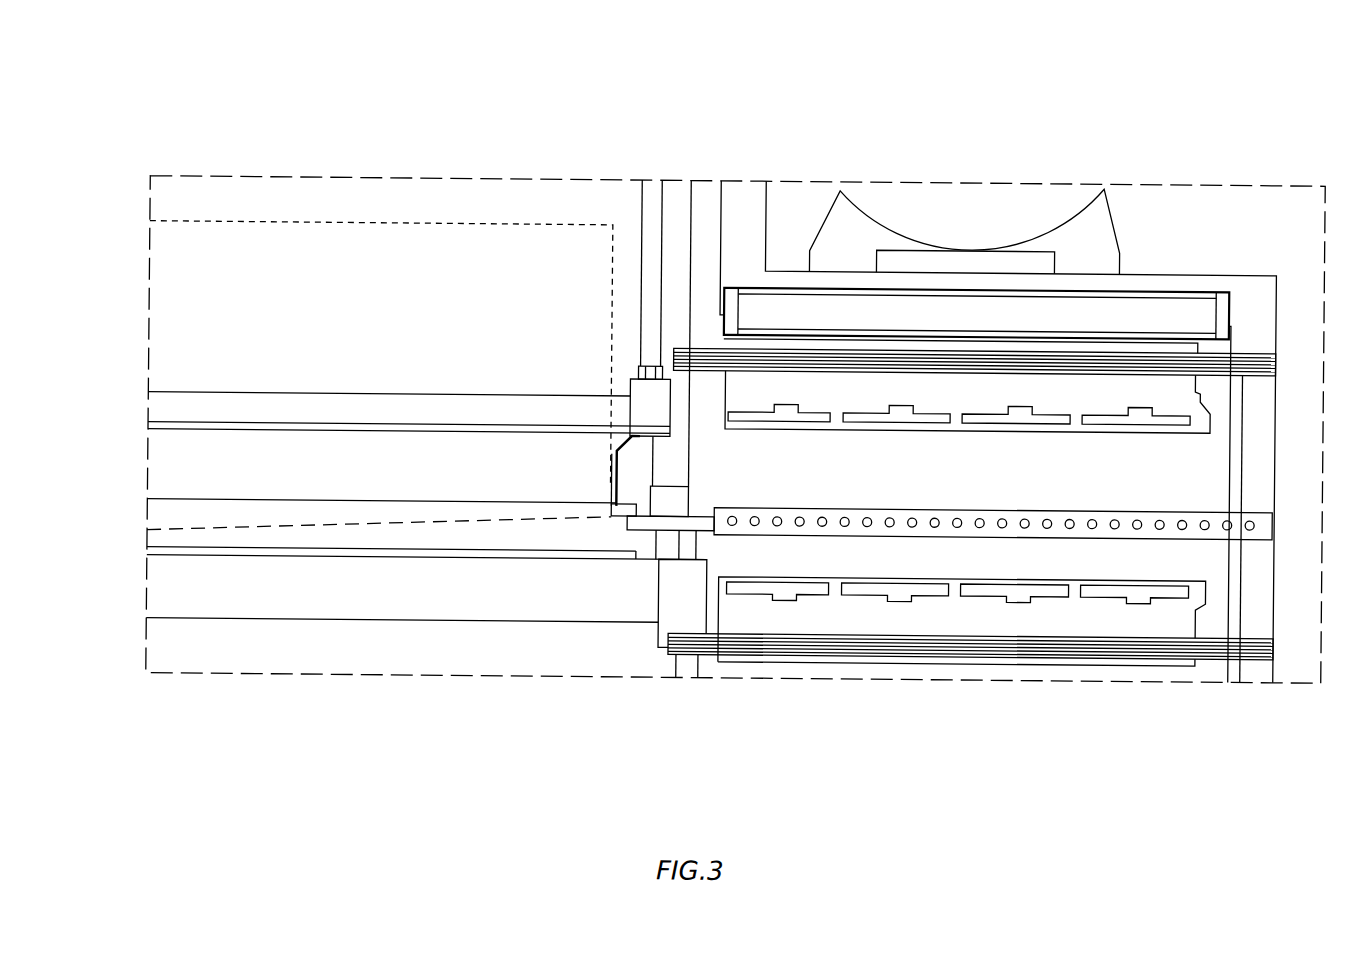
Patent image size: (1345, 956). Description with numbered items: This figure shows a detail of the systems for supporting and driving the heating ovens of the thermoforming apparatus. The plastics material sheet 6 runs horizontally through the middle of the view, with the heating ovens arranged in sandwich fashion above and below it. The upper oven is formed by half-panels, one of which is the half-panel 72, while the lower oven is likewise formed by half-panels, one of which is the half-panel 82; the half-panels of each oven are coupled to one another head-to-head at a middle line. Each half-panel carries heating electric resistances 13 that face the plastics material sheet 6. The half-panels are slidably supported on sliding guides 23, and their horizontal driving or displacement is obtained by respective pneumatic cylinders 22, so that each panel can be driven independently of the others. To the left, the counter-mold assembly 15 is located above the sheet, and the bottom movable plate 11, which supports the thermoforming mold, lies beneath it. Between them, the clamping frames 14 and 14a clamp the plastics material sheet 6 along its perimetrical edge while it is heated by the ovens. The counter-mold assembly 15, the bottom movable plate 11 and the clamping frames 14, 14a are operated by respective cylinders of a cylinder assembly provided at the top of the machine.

The counter-mold assembly 15 is at (280, 411).
The bottom movable plate 11 is at (270, 596).
The plastics material sheet 6 is at (380, 527).
The clamping frame 14 is at (614, 482).
The clamping frame 14a is at (626, 511).
The pneumatic cylinder 22 is at (1169, 306).
The sliding guide 23 is at (1256, 360).
The half-panel 72 is at (755, 390).
The heating electric resistance 13 is at (836, 414).
The half-panel 82 is at (751, 616).